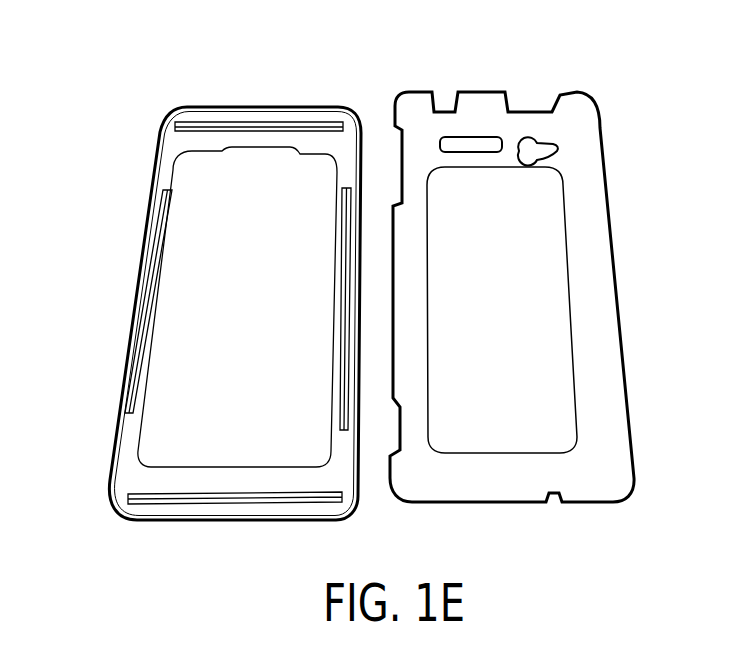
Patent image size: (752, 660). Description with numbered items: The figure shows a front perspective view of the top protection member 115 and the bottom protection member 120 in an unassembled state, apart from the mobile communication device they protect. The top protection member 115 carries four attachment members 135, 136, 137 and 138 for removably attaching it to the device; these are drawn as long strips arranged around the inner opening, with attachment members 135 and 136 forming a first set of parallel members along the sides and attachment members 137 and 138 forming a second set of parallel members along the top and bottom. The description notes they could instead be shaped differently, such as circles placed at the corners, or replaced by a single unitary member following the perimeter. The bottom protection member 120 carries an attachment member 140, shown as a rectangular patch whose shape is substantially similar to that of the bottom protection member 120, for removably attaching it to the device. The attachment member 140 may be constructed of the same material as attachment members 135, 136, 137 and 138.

The top protection member 115 is at (122, 488).
The bottom protection member 120 is at (575, 120).
The attachment member 135 is at (147, 258).
The attachment member 136 is at (348, 373).
The attachment member 137 is at (300, 122).
The attachment member 138 is at (222, 507).
The attachment member 140 is at (547, 440).